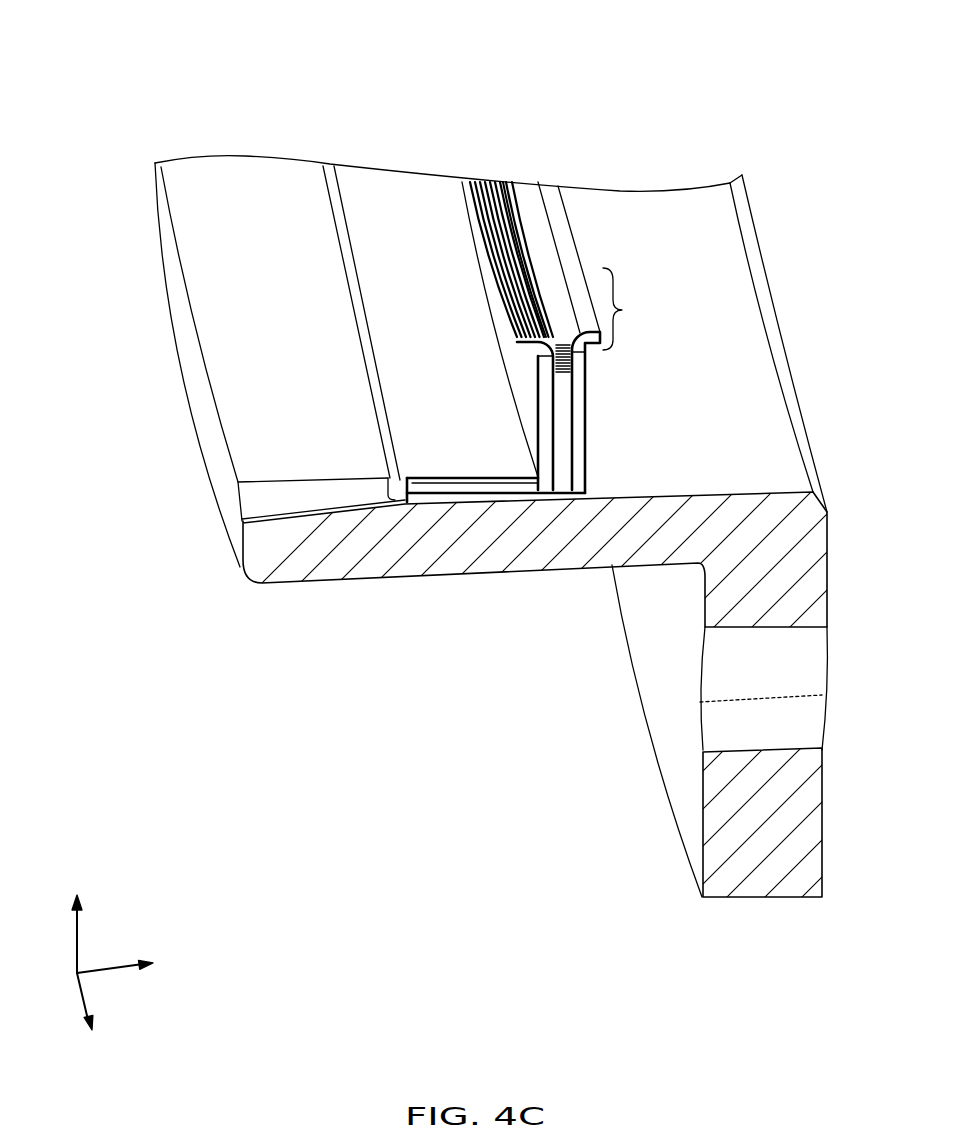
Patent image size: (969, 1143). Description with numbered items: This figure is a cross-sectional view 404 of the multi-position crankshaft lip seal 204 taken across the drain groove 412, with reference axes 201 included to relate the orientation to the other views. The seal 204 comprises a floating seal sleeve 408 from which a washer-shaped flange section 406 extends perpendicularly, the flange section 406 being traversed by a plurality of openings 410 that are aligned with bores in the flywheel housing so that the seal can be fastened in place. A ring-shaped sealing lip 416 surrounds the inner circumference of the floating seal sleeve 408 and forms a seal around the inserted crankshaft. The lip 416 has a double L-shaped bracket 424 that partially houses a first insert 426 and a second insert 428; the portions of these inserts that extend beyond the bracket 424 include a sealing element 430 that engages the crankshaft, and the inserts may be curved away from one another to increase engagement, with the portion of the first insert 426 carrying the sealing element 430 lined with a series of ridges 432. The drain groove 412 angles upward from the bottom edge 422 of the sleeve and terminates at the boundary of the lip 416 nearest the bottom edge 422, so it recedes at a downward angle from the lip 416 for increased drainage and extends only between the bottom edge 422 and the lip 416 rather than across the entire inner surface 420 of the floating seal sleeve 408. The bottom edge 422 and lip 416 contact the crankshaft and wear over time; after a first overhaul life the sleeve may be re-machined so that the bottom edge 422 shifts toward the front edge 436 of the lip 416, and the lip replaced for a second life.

The cross-sectional view 404 is at (822, 86).
The reference axes 201 is at (125, 888).
The multi-position crankshaft lip seal 204 is at (651, 235).
The flange section 406 is at (687, 795).
The floating seal sleeve 408 is at (651, 440).
The plurality of openings 410 is at (667, 700).
The drain groove 412 is at (235, 507).
The sealing lip 416 is at (396, 246).
The inner surface 420 is at (740, 292).
The bottom edge 422 is at (193, 365).
The double L-shaped bracket 424 is at (439, 423).
The first insert 426 is at (495, 182).
The second insert 428 is at (557, 188).
The sealing element 430 is at (632, 321).
The series of ridges 432 is at (495, 294).
The front edge 436 is at (372, 383).